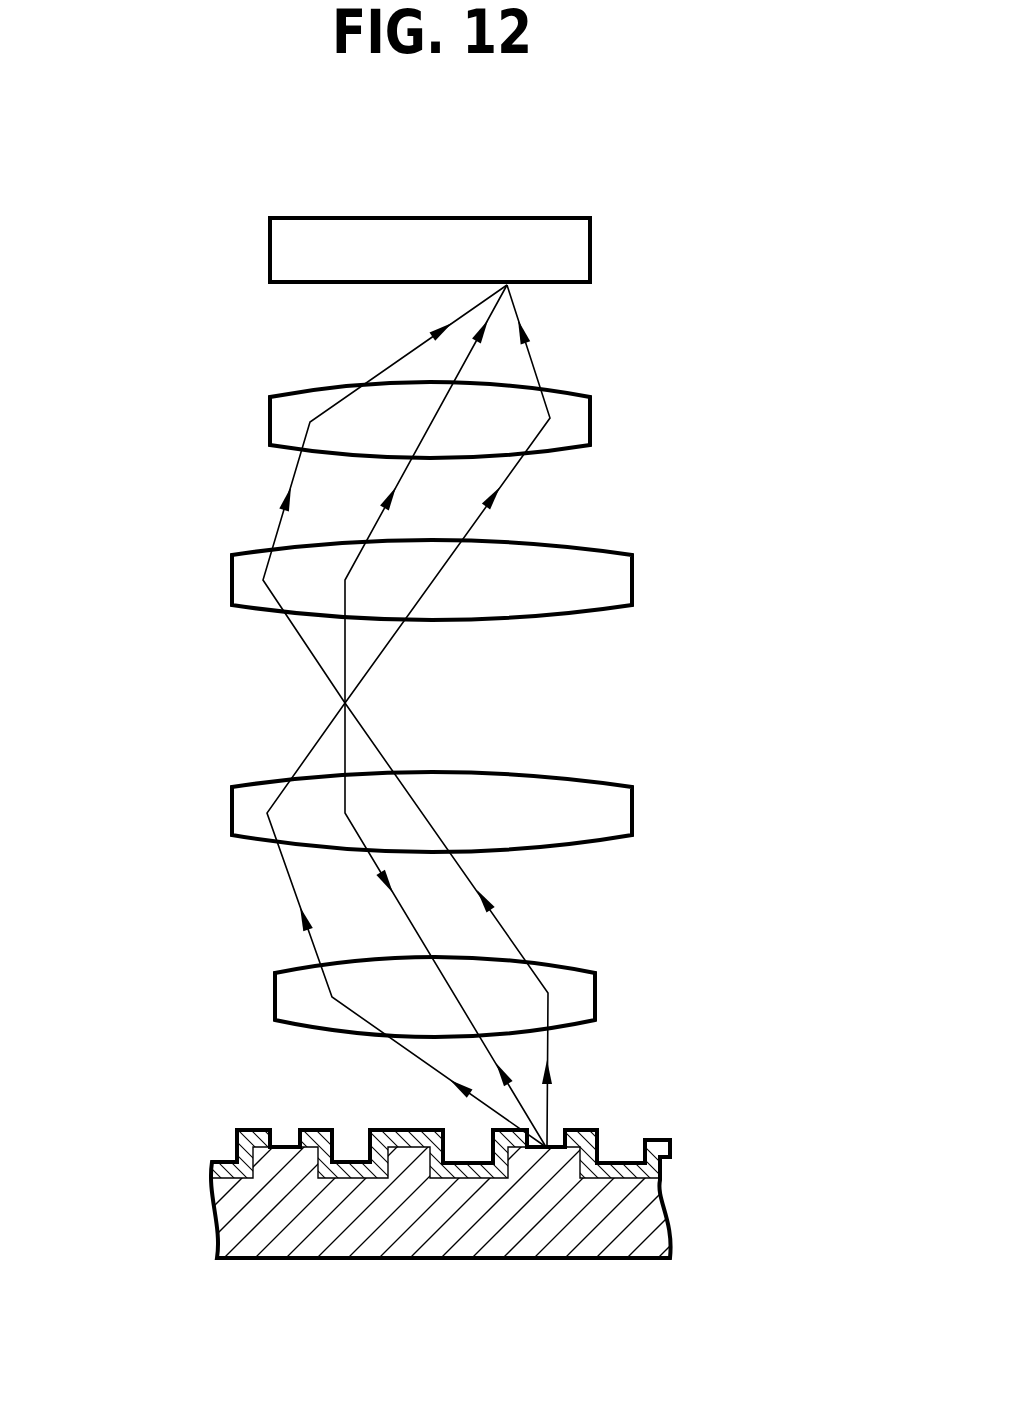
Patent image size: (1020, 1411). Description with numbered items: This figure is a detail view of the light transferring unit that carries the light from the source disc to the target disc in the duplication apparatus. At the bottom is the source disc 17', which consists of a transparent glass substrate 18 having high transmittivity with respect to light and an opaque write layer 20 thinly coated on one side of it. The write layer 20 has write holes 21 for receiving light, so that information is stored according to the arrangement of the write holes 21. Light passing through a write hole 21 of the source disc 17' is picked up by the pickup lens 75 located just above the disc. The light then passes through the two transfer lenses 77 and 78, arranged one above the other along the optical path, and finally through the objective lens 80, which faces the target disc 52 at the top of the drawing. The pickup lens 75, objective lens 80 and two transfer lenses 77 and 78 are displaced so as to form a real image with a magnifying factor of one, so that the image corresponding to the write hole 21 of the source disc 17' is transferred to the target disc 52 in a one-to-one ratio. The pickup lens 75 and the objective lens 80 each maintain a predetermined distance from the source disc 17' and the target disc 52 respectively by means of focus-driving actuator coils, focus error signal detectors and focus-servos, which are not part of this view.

The target disc 52 is at (590, 250).
The objective lens 80 is at (590, 420).
The transfer lens 78 is at (632, 578).
The transfer lens 77 is at (632, 820).
The pickup lens 75 is at (595, 1000).
The write hole 21 is at (552, 1138).
The write layer 20 is at (670, 1147).
The glass substrate 18 is at (607, 1260).
The source disc 17' is at (448, 1210).